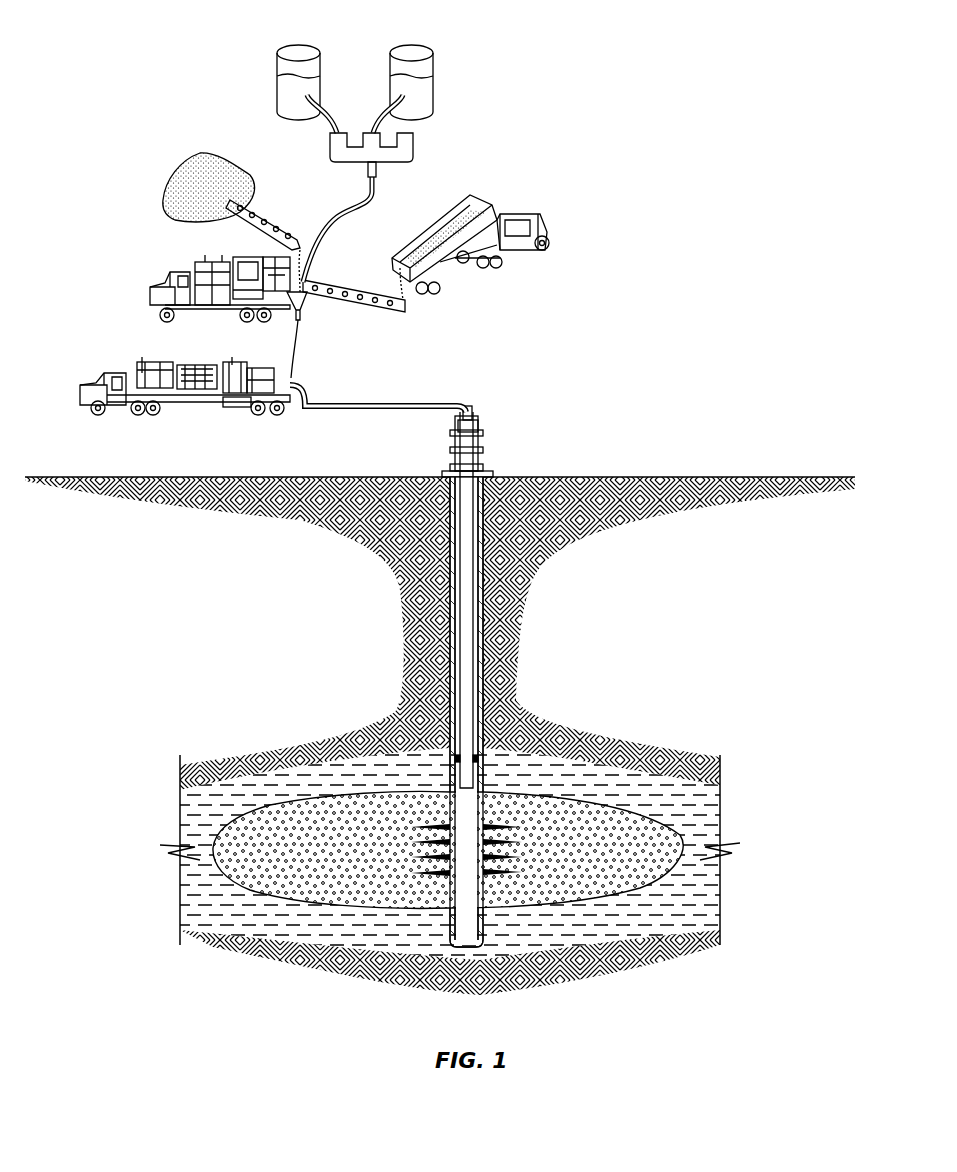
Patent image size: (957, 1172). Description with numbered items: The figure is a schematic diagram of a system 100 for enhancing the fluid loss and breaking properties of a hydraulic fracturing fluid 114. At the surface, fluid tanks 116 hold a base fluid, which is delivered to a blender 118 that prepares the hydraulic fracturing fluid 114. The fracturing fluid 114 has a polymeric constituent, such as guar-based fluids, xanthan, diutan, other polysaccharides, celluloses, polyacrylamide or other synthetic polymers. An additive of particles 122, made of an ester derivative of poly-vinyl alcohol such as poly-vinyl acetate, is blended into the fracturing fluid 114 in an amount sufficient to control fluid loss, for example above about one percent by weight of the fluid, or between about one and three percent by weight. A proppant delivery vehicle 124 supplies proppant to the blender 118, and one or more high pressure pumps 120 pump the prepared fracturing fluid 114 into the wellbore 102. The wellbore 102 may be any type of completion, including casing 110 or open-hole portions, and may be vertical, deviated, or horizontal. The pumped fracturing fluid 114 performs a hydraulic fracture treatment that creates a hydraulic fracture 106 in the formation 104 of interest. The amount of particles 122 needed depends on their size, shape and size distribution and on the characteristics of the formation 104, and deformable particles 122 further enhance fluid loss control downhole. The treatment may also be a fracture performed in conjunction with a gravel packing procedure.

The system 100 is at (630, 80).
The wellbore 102 is at (484, 610).
The formation 104 is at (700, 807).
The hydraulic fracture 106 is at (612, 868).
The casing 110 is at (483, 645).
The hydraulic fracturing fluid 114 is at (393, 404).
The fluid tanks 116 is at (438, 80).
The blender 118 is at (166, 287).
The high pressure pumps 120 is at (98, 378).
The particles 122 is at (166, 190).
The proppant delivery vehicle 124 is at (480, 193).